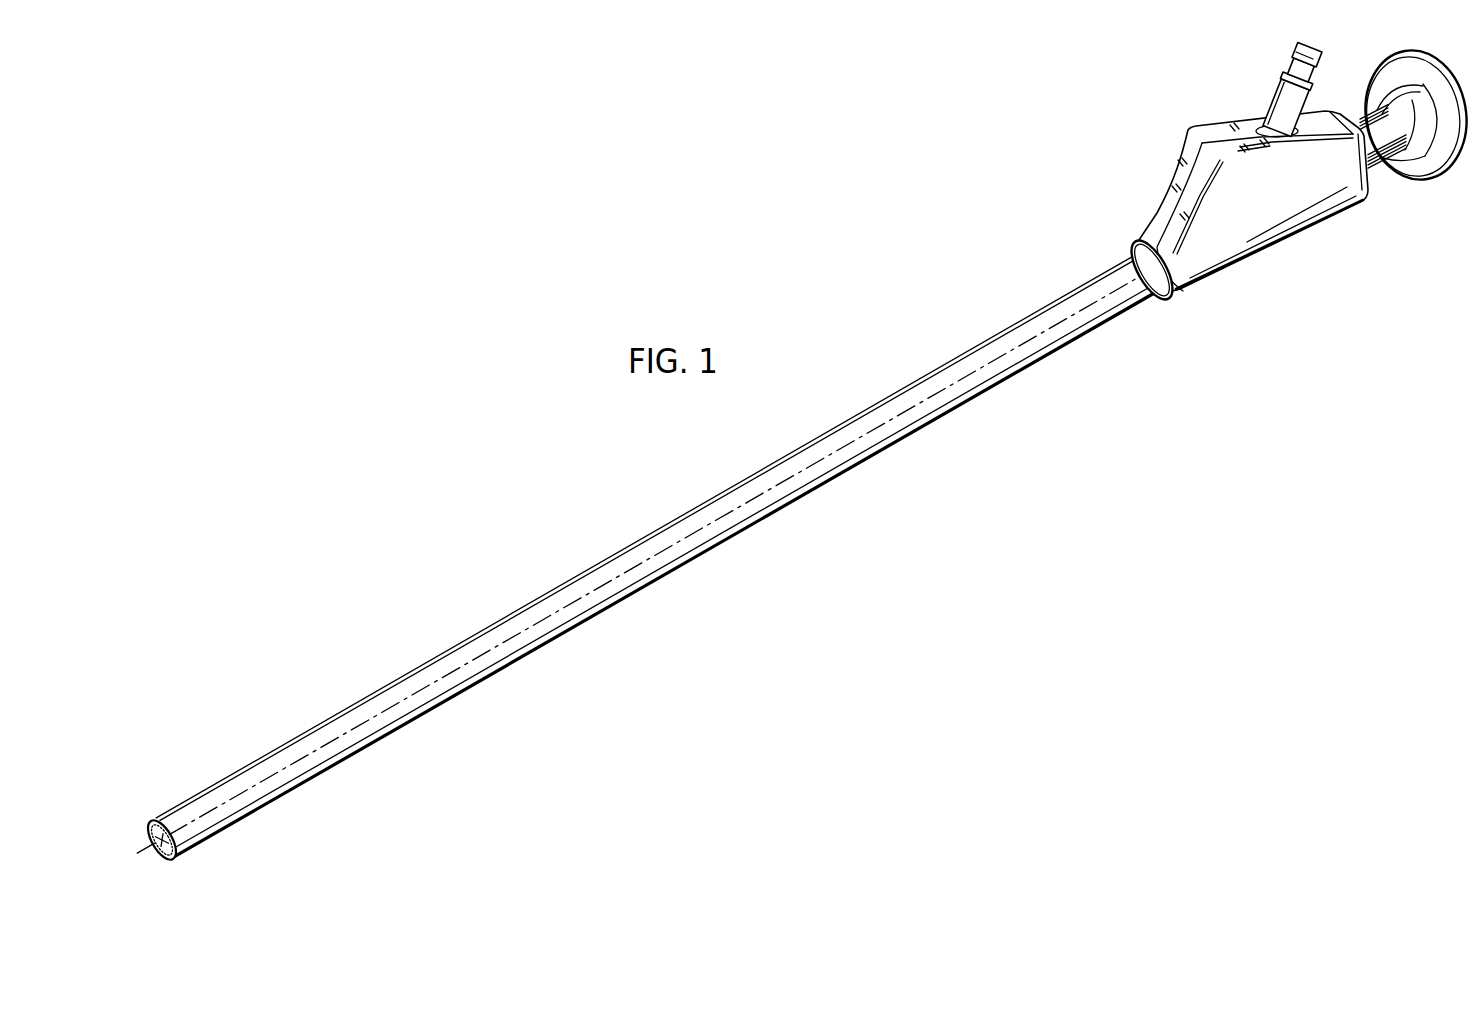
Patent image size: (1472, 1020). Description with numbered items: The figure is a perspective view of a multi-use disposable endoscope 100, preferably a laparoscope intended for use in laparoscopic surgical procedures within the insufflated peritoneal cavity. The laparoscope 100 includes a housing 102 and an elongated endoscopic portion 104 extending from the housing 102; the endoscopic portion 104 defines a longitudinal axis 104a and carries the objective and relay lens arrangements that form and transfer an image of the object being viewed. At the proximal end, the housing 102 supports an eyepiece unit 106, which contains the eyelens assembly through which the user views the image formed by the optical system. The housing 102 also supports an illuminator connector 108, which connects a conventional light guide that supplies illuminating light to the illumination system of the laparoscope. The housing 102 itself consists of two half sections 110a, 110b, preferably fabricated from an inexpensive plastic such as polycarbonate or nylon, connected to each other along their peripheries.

The endoscope 100 is at (931, 594).
The housing 102 is at (1303, 231).
The endoscopic portion 104 is at (693, 541).
The longitudinal axis 104a is at (368, 718).
The eyepiece unit 106 is at (1428, 198).
The illuminator connector 108 is at (1270, 96).
The half section 110a is at (1190, 150).
The half section 110b is at (1222, 266).